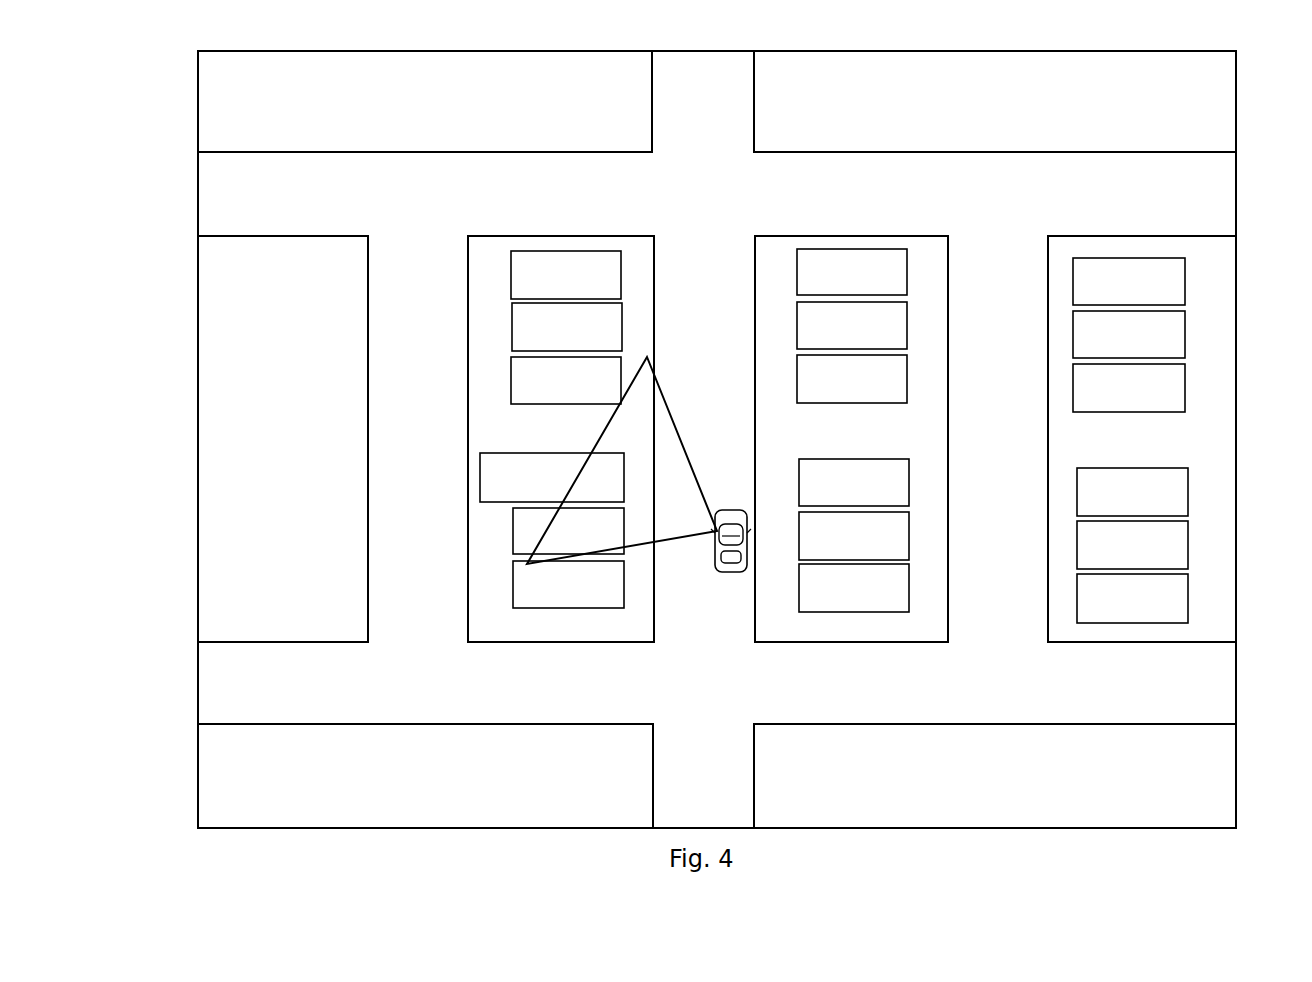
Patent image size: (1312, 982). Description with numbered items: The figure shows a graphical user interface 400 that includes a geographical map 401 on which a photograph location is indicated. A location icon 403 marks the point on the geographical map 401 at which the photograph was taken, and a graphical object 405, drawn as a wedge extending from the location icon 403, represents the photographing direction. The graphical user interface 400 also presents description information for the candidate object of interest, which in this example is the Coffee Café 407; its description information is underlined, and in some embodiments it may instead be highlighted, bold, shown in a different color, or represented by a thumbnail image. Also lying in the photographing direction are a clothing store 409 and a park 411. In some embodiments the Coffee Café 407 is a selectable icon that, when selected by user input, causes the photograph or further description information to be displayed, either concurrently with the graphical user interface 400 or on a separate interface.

The graphical user interface 400 is at (198, 96).
The geographical map 401 is at (1215, 220).
The location icon 403 is at (733, 508).
The graphical object 405 is at (668, 540).
The Coffee Café 407 is at (480, 475).
The clothing store 409 is at (512, 543).
The park 411 is at (485, 413).